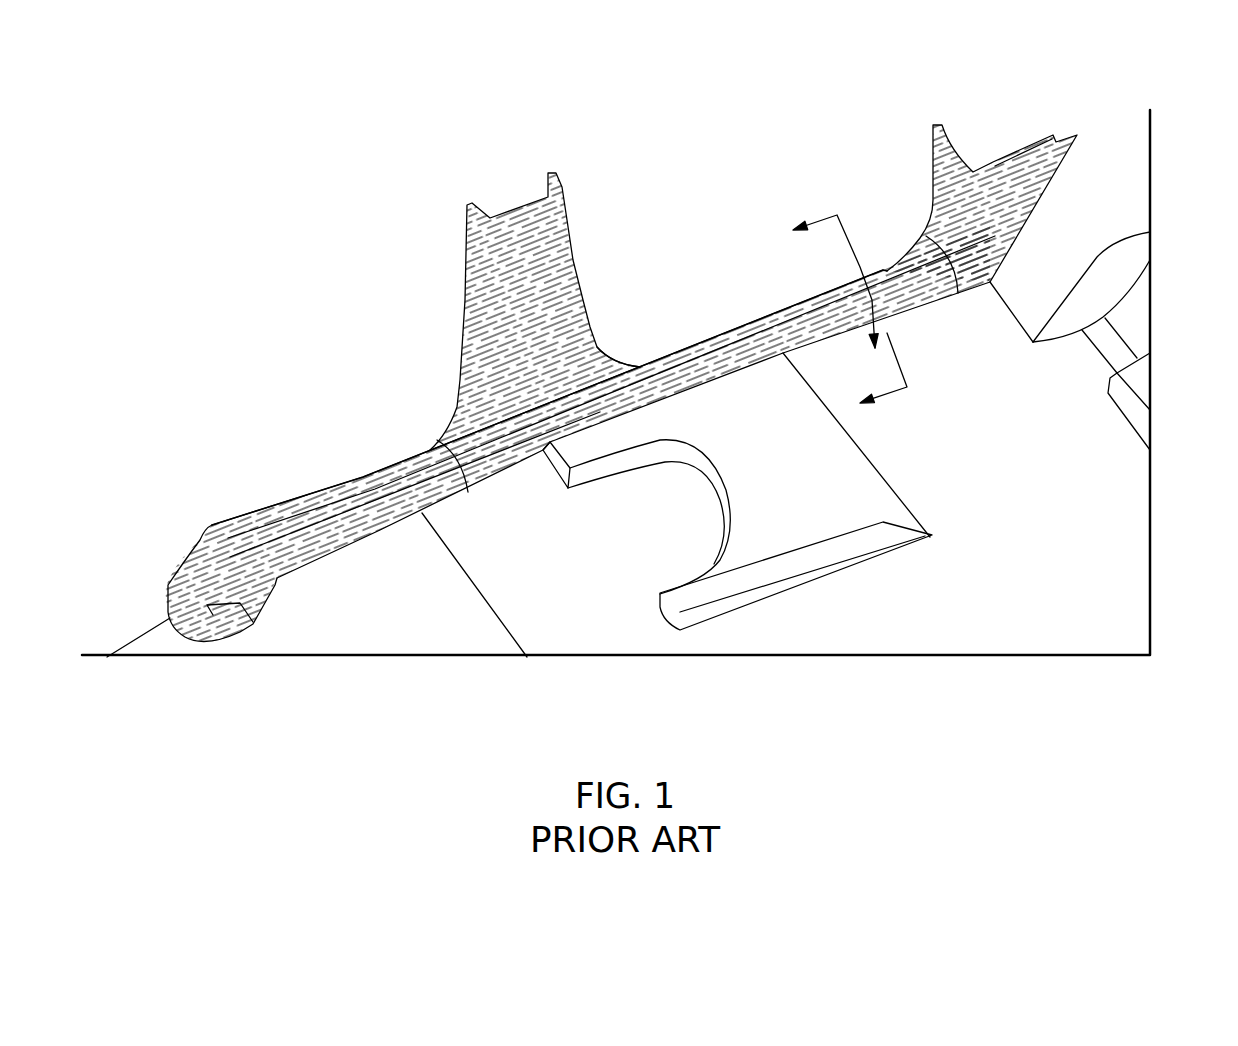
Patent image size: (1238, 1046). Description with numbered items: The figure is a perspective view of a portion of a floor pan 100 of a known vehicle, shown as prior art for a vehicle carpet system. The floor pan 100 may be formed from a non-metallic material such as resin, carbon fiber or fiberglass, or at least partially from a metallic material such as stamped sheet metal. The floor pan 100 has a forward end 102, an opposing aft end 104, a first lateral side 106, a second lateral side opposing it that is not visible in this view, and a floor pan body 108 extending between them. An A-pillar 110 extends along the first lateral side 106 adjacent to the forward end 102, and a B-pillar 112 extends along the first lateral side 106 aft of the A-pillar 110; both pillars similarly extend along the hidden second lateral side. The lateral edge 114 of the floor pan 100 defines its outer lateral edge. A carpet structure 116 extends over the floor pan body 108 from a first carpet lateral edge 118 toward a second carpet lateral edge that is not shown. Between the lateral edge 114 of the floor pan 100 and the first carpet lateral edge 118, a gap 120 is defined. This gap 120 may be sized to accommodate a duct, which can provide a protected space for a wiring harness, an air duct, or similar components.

The floor pan 100 is at (616, 104).
The forward end 102 is at (1125, 328).
The aft end 104 is at (358, 610).
The first lateral side 106 is at (599, 425).
The floor pan body 108 is at (973, 454).
The A-pillar 110 is at (1040, 150).
The B-pillar 112 is at (513, 332).
The lateral edge 114 is at (360, 478).
The carpet structure 116 is at (565, 594).
The first carpet lateral edge 118 is at (440, 442).
The gap 120 is at (660, 369).